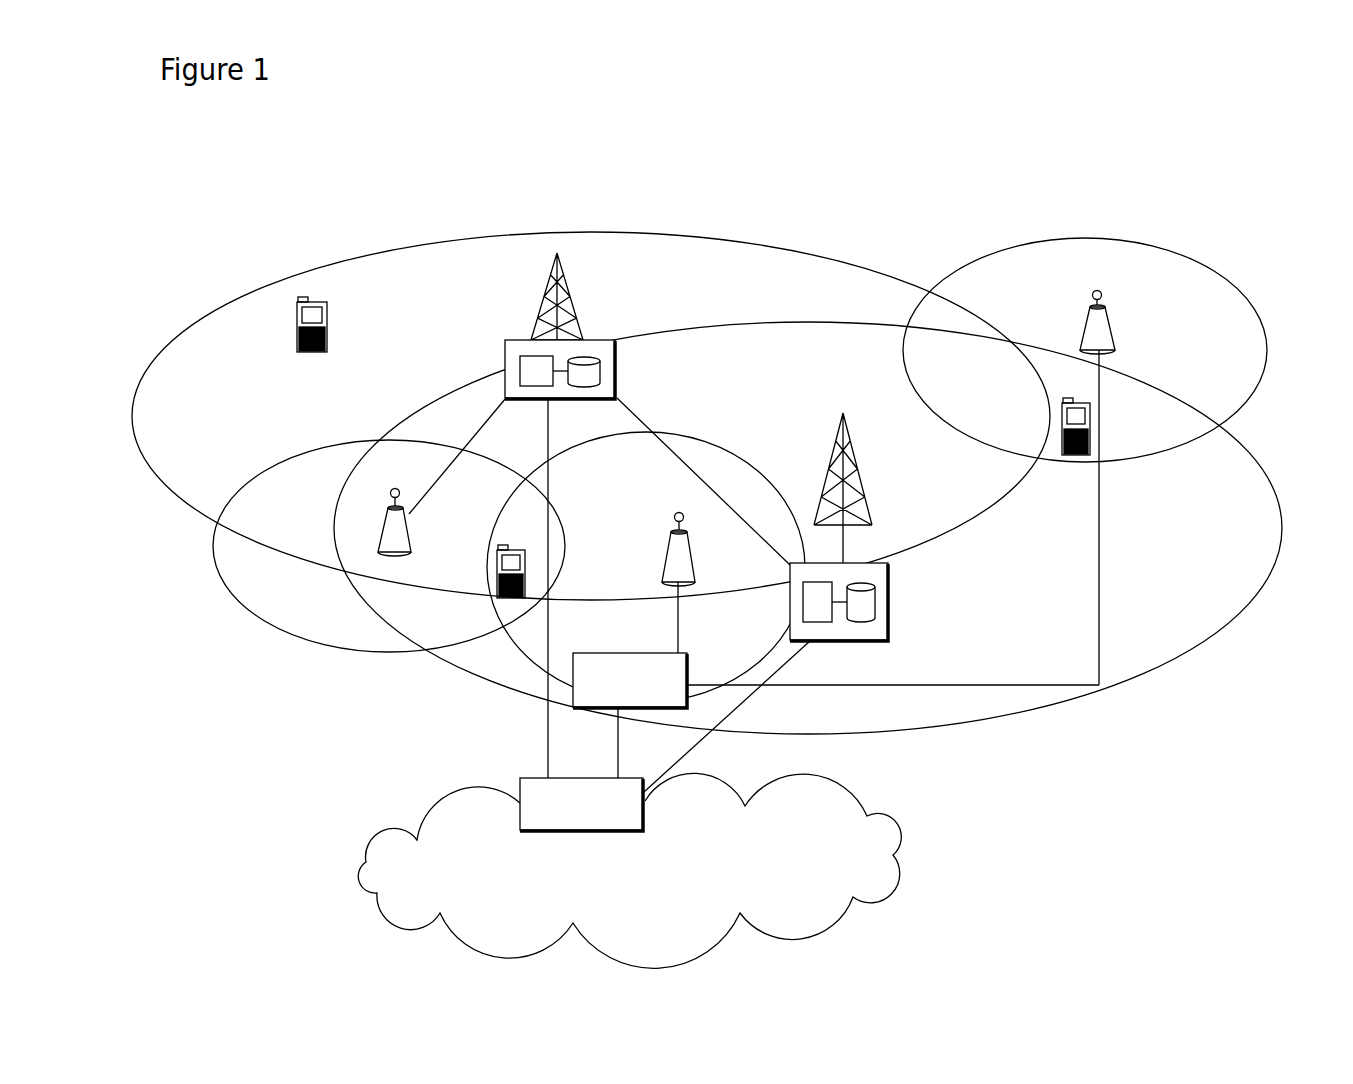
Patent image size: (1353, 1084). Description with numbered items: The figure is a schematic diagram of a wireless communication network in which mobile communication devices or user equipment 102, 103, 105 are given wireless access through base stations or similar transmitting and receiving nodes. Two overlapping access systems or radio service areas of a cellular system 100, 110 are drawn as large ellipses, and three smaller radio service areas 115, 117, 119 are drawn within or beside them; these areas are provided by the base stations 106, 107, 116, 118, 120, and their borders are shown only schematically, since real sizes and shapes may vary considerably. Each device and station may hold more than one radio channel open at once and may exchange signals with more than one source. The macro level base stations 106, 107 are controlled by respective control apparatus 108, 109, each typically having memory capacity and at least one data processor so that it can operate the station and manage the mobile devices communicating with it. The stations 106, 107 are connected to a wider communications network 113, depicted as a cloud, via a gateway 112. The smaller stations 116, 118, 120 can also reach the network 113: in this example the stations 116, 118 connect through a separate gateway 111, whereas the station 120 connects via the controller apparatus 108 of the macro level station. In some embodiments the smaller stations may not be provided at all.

The radio service area of a cellular system 100 is at (226, 283).
The user equipment 102 is at (297, 342).
The user equipment 103 is at (495, 577).
The user equipment 105 is at (1075, 458).
The macro level base station 106 is at (540, 307).
The macro level base station 107 is at (863, 492).
The control apparatus 108 is at (505, 355).
The control apparatus 109 is at (880, 630).
The radio service area of a cellular system 110 is at (1160, 677).
The gateway 111 is at (582, 685).
The gateway 112 is at (522, 775).
The wider communications network 113 is at (445, 840).
The smaller radio service area 115 is at (1237, 265).
The smaller station 116 is at (1085, 325).
The smaller radio service area 117 is at (710, 443).
The smaller station 118 is at (680, 567).
The smaller radio service area 119 is at (298, 628).
The smaller station 120 is at (382, 525).